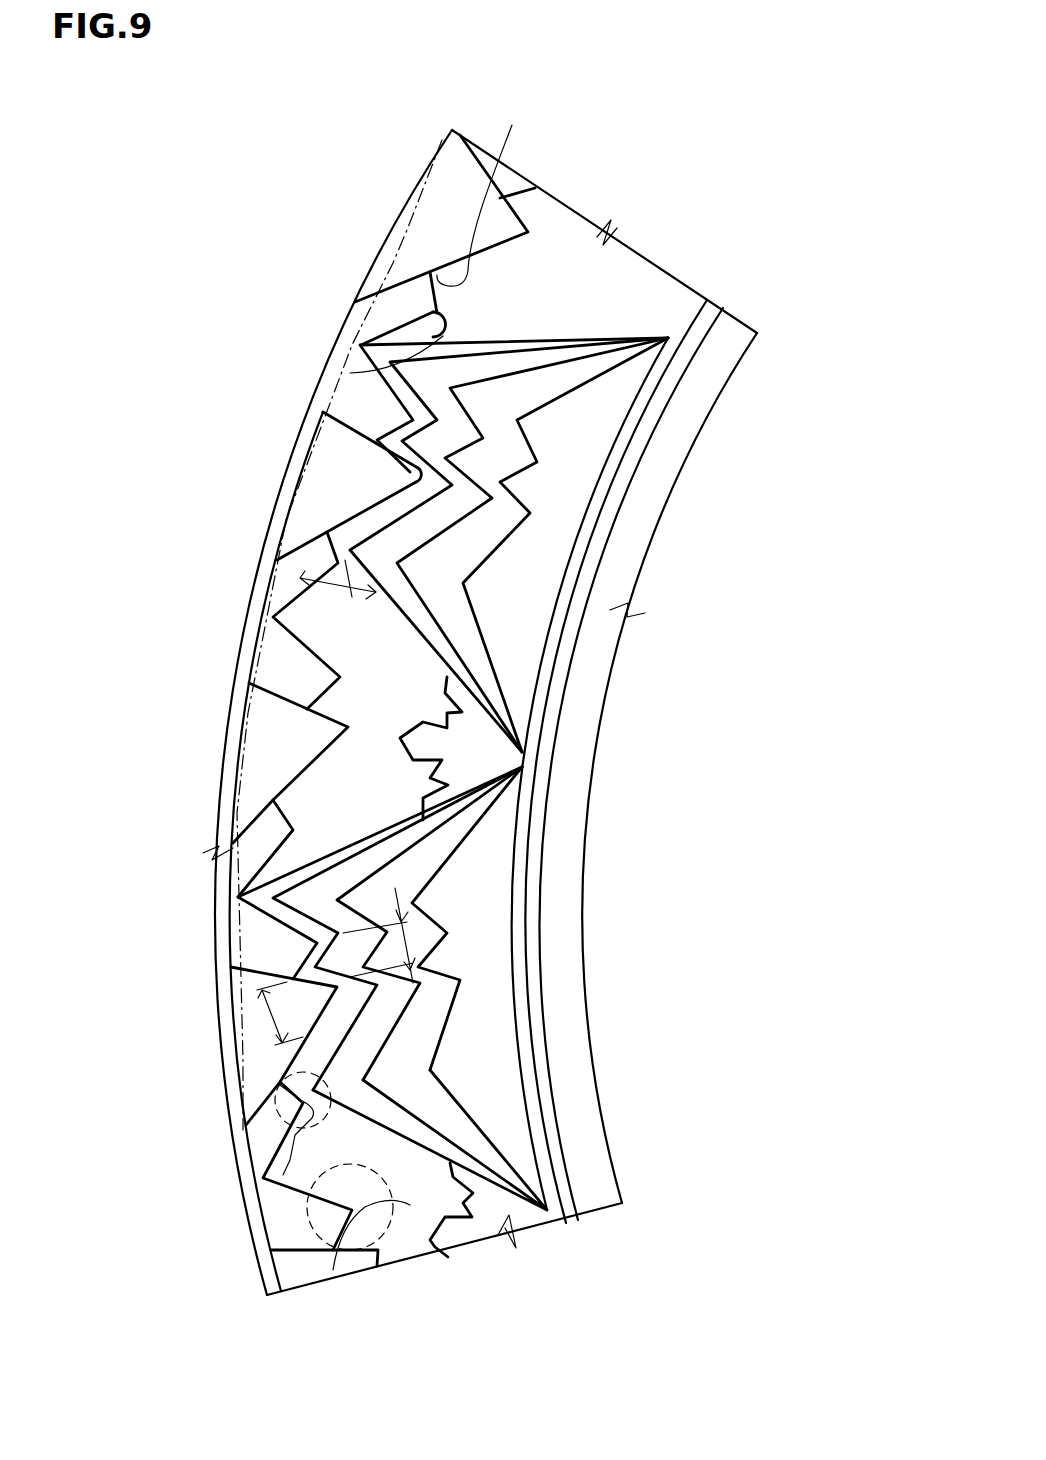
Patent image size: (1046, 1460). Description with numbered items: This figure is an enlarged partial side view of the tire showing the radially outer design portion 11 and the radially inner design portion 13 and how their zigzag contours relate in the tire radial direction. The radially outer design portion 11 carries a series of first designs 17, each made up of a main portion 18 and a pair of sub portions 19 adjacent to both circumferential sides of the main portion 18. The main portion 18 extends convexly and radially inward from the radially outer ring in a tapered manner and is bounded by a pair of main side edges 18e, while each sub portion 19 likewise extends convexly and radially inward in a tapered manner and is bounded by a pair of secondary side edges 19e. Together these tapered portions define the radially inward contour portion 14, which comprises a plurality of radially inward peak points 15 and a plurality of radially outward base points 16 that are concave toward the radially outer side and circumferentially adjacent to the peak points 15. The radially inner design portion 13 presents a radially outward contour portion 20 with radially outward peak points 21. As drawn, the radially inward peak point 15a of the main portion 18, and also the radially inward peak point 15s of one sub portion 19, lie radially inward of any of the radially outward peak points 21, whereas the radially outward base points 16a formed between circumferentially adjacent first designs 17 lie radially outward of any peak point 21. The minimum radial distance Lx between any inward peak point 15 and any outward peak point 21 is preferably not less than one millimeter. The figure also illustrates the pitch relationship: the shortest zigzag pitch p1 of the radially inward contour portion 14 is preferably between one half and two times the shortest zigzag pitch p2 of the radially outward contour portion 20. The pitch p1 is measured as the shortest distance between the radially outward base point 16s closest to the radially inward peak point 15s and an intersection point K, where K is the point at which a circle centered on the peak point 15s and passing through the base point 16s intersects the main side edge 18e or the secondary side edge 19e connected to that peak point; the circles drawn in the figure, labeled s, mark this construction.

The radially outer design portion 11 is at (408, 171).
The radially inner design portion 13 is at (668, 477).
The radially inward contour portion 14 is at (560, 228).
The radially inward peak point 15 is at (405, 330).
The radially inward peak point of the main portion 15a is at (420, 480).
The radially inward peak point 15s is at (315, 1135).
The radially outward base point 16 is at (486, 191).
The radially outward base point between adjacent first designs 16a is at (280, 617).
The radially outward base point 16s is at (280, 1085).
The first design 17 is at (422, 133).
The main portion 18 is at (340, 457).
The main side edge 18e is at (215, 1003).
The sub portion 19 is at (410, 300).
The secondary side edge 19e is at (243, 1195).
The radially outward contour portion 20 is at (587, 330).
The radially outward peak point 21 is at (350, 373).
The minimum distance in the tire radial direction Lx is at (300, 597).
The shortest zigzag pitch of the radially inward contour portion p1 is at (260, 990).
The shortest zigzag pitch of the radially outward contour portion p2 is at (407, 943).
The region s is at (233, 1130).
The intersection point K is at (280, 1165).